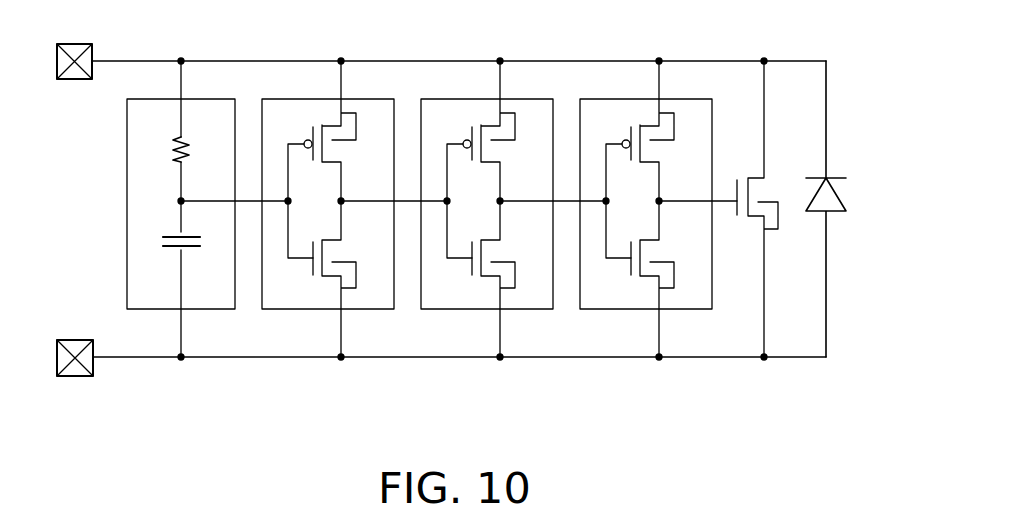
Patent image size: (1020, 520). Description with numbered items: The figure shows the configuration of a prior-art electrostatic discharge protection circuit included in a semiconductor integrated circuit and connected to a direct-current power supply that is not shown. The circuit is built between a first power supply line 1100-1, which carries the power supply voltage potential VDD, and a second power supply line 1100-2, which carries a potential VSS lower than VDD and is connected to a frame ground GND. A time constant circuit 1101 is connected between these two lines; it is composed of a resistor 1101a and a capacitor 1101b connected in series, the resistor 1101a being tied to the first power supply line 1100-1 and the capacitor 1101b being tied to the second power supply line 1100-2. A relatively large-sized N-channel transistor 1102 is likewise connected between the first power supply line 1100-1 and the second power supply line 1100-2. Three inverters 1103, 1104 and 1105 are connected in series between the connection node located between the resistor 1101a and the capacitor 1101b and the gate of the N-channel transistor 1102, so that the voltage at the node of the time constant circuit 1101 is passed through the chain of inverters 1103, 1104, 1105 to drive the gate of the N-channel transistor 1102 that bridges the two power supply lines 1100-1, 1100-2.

The first power supply line 1100-1 is at (237, 60).
The second power supply line 1100-2 is at (402, 358).
The time constant circuit 1101 is at (141, 182).
The resistor 1101a is at (172, 150).
The capacitor 1101b is at (163, 240).
The N-channel transistor 1102 is at (770, 188).
The inverter 1103 is at (371, 99).
The inverter 1104 is at (530, 99).
The inverter 1105 is at (688, 99).